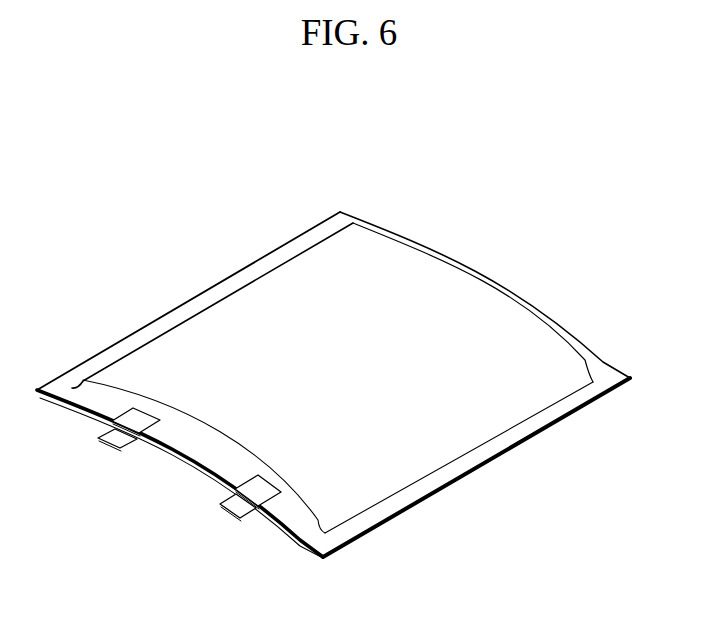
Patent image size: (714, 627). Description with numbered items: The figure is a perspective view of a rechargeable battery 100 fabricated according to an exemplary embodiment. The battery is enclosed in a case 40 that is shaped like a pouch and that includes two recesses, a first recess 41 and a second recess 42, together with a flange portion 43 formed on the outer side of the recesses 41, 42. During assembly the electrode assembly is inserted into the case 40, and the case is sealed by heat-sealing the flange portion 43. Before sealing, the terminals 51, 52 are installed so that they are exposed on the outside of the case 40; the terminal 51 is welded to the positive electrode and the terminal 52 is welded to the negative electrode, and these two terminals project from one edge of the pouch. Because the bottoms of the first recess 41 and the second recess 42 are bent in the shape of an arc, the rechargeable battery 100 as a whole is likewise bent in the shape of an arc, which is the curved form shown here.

The rechargeable battery 100 is at (333, 370).
The case 40 is at (195, 376).
The first recess 41 is at (180, 450).
The second recess 42 is at (313, 260).
The flange portion 43 is at (245, 270).
The terminal 51 is at (103, 438).
The terminal 52 is at (223, 510).